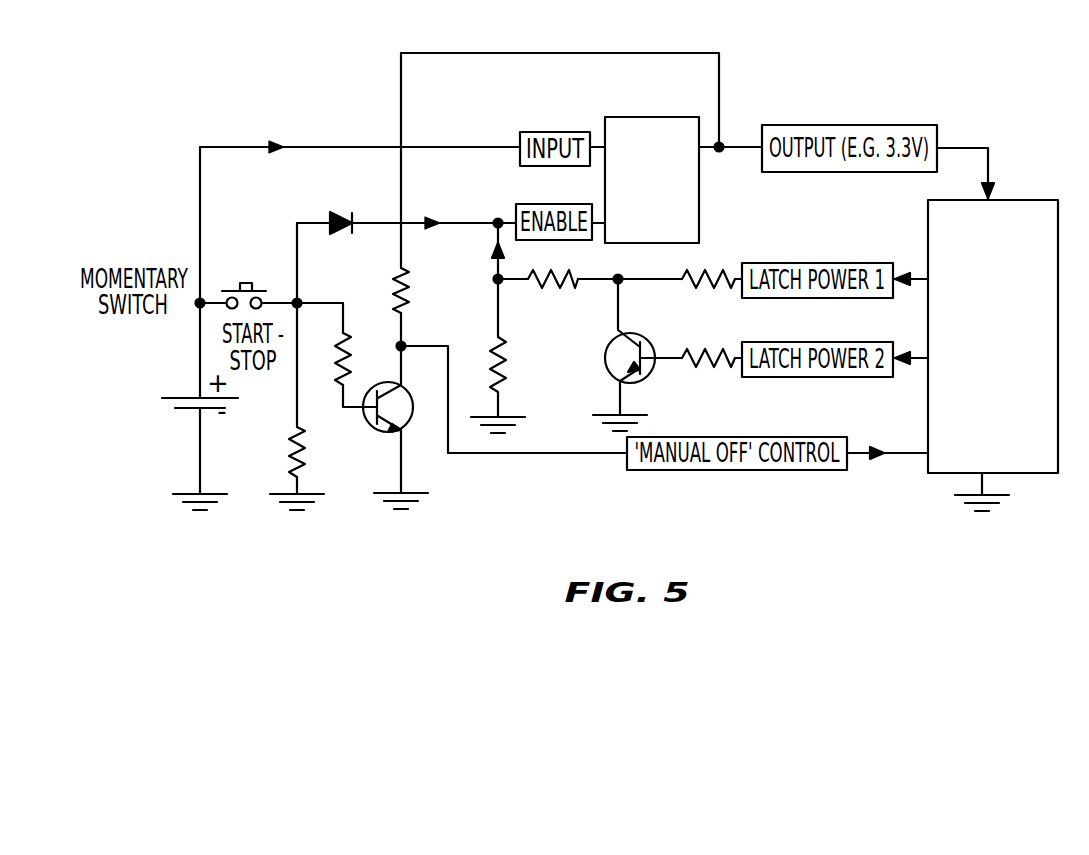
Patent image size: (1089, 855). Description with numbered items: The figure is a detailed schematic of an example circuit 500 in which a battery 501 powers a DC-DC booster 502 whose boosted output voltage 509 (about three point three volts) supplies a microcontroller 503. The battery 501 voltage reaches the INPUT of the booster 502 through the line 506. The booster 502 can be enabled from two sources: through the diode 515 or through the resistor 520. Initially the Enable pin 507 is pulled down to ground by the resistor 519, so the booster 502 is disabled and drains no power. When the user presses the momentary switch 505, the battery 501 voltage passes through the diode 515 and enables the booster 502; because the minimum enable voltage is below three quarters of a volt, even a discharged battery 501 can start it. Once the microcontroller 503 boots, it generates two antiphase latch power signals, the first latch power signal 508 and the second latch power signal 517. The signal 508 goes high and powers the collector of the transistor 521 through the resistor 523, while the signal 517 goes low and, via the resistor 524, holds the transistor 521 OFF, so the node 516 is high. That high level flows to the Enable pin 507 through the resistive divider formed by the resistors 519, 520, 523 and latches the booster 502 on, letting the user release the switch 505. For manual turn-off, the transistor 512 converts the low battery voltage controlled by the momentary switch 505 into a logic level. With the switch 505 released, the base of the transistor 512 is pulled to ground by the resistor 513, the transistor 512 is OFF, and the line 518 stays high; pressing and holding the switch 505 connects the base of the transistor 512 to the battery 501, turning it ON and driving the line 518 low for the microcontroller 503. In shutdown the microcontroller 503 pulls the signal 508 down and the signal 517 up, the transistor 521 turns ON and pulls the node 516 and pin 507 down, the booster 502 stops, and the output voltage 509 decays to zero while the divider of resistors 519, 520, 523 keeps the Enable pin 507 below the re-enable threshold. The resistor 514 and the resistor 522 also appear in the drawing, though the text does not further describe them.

The circuit 500 is at (850, 88).
The battery 501 is at (178, 396).
The DC-DC booster 502 is at (650, 117).
The microcontroller 503 is at (928, 240).
The momentary switch 505 is at (244, 281).
The line 506 is at (310, 146).
The Enable pin 507 is at (462, 222).
The LATCH POWER 1 signal 508 is at (918, 290).
The output voltage 509 is at (752, 145).
The transistor 512 is at (408, 424).
The resistor 513 is at (292, 452).
The resistor 514 is at (350, 352).
The diode 515 is at (345, 214).
The node 516 is at (598, 283).
The LATCH POWER 2 signal 517 is at (918, 368).
The line 518 is at (535, 455).
The resistor 519 is at (510, 344).
The resistor 520 is at (533, 288).
The transistor 521 is at (644, 378).
The resistor 522 is at (411, 273).
The resistor 523 is at (708, 271).
The resistor 524 is at (694, 349).